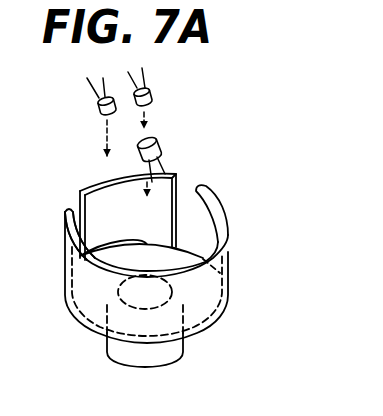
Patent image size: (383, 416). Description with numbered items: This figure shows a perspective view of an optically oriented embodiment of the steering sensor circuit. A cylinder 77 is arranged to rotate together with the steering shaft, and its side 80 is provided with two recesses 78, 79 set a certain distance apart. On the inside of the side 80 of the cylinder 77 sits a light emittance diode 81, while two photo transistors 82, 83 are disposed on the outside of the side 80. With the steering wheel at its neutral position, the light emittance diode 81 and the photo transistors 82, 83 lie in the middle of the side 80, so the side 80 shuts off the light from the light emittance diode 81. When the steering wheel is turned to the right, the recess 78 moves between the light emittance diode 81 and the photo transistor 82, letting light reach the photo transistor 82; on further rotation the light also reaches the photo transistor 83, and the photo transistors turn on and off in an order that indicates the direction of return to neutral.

The cylinder 77 is at (86, 318).
The recess 78 is at (76, 206).
The recess 79 is at (183, 185).
The side 80 is at (166, 174).
The light emittance diode 81 is at (156, 144).
The photo transistor 82 is at (99, 108).
The photo transistor 83 is at (153, 93).